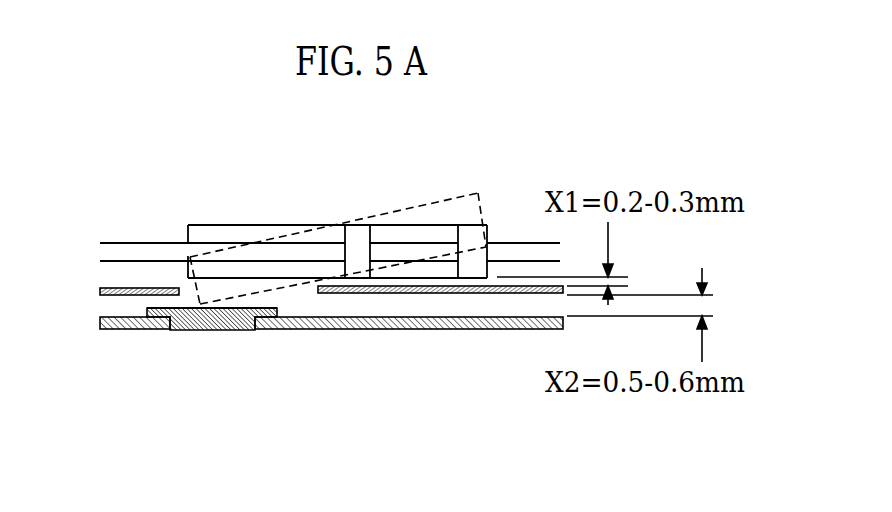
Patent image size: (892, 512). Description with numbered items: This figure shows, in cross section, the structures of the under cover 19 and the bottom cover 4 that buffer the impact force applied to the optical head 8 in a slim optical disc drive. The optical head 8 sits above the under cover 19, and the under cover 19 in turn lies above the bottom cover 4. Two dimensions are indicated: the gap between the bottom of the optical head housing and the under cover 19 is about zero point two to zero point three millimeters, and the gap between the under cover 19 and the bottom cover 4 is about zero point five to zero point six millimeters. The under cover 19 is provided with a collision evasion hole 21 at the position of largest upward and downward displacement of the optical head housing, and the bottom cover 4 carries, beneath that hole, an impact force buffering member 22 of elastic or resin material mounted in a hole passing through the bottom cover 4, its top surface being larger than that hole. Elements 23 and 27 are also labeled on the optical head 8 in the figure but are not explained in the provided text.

The bottom cover 4 is at (373, 324).
The optical head 8 is at (230, 192).
The under cover 19 is at (125, 296).
The collision evasion hole 21 is at (287, 297).
The impact force buffering member 22 is at (210, 322).
The terminal 23 is at (162, 253).
The slit 27 is at (353, 240).